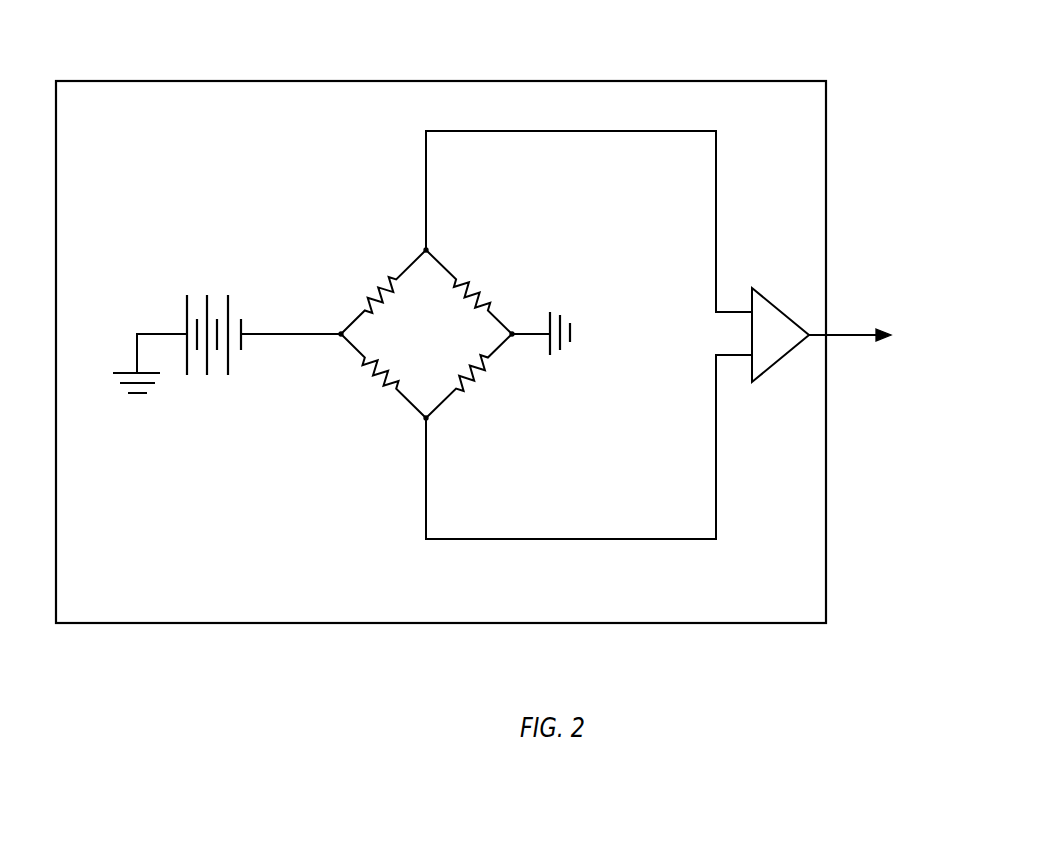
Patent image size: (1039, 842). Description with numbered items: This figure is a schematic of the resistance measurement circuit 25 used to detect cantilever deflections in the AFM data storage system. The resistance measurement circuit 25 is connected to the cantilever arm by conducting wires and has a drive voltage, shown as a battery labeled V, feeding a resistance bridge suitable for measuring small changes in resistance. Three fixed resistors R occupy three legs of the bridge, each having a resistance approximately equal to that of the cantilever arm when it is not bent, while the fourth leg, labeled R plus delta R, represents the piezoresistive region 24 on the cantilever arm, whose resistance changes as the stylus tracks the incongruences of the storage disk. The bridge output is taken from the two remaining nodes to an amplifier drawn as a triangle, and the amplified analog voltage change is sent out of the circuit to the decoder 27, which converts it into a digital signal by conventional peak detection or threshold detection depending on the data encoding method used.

The resistance measurement circuit 25 is at (660, 80).
The piezoresistive region 24 is at (383, 390).
The decoder 27 is at (921, 315).